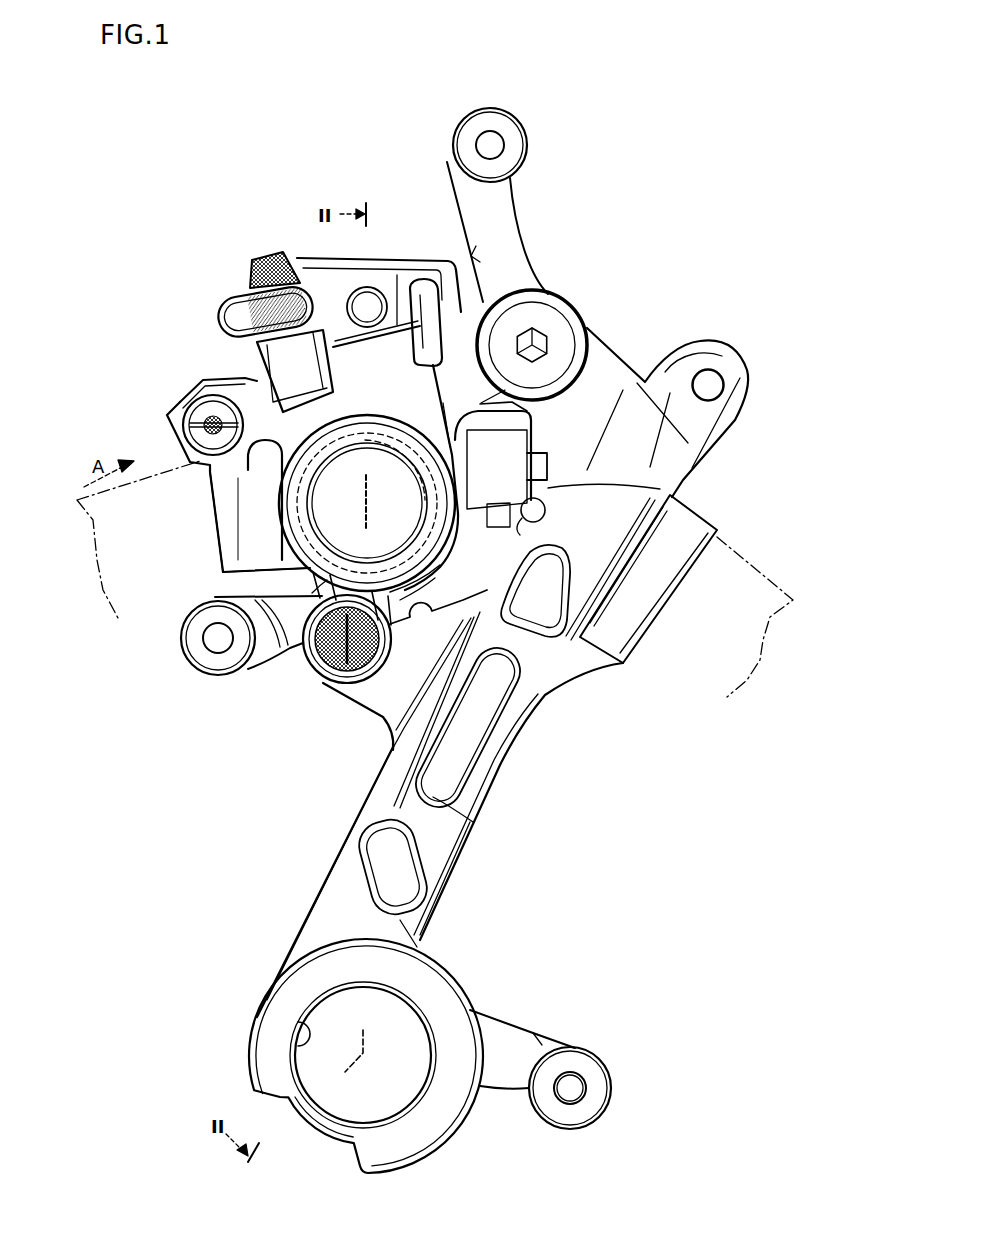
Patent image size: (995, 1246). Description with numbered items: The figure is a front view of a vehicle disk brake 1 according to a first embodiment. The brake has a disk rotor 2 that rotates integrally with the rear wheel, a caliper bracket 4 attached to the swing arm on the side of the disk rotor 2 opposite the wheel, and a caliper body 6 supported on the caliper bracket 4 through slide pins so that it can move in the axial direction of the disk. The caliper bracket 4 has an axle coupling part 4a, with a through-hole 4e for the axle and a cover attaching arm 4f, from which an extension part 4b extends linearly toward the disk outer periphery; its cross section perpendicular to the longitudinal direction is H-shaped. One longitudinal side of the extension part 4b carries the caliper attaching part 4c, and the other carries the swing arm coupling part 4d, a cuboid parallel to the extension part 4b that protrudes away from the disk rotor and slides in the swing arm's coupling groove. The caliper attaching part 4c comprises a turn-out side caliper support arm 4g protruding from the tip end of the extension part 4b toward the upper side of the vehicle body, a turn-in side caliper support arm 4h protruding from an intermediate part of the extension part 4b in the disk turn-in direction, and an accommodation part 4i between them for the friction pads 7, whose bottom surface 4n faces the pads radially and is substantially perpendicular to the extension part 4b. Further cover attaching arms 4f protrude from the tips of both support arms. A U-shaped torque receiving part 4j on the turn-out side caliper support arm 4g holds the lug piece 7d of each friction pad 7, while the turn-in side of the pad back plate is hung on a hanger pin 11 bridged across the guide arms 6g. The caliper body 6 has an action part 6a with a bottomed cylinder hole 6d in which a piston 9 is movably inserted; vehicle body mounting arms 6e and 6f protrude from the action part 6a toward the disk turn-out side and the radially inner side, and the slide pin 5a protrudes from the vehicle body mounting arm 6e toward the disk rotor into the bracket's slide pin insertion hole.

The vehicle disk brake 1 is at (420, 84).
The disk rotor 2 is at (757, 572).
The caliper bracket 4 is at (312, 866).
The axle coupling part 4a is at (410, 1145).
The extension part 4b is at (500, 755).
The caliper attaching part 4c is at (312, 700).
The swing arm coupling part 4d is at (705, 512).
The through-hole 4e is at (297, 1040).
The cover attaching arm 4f is at (507, 218).
The turn-out side caliper support arm 4g is at (606, 356).
The turn-in side caliper support arm 4h is at (367, 700).
The accommodation part 4i is at (235, 592).
The torque receiving part 4j is at (517, 448).
The bottom surface 4n is at (400, 625).
The slide pin 5a is at (555, 325).
The caliper body 6 is at (228, 352).
The action part 6a is at (292, 512).
The cylinder hole 6d is at (362, 428).
The vehicle body mounting arm 6e is at (477, 300).
The vehicle body mounting arm 6f is at (384, 604).
The guide arm 6g is at (262, 446).
The friction pad 7 is at (190, 531).
The lug piece 7d is at (546, 508).
The piston 9 is at (403, 438).
The hanger pin 11 is at (198, 412).